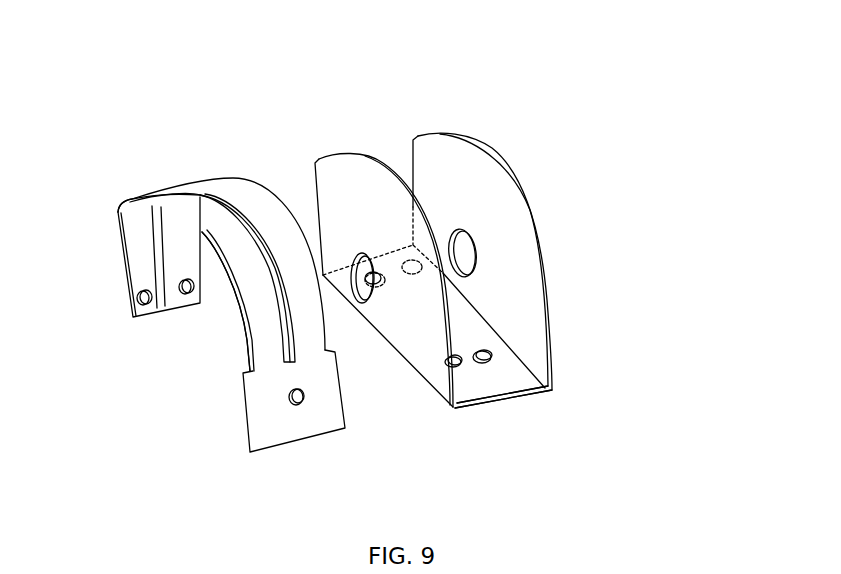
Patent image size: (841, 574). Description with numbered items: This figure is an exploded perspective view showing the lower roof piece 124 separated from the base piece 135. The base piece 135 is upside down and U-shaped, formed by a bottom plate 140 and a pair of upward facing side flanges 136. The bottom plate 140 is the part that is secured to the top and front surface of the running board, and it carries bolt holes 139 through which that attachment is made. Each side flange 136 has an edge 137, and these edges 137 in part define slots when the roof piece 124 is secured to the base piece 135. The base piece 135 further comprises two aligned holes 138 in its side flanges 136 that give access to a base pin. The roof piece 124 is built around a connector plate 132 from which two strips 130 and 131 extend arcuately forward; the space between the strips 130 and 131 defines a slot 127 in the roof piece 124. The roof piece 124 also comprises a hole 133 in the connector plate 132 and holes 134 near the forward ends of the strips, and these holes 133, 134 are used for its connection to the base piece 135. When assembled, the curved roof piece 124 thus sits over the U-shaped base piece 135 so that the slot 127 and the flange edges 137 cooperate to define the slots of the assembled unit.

The roof piece 124 is at (203, 273).
The slot 127 is at (209, 199).
The strip 130 is at (266, 208).
The strip 131 is at (236, 306).
The connector plate 132 is at (242, 437).
The hole 133 is at (284, 398).
The holes 134 is at (178, 294).
The base piece 135 is at (498, 252).
The side flanges 136 is at (333, 181).
The edges 137 is at (531, 245).
The aligned holes 138 is at (470, 255).
The bolt holes 139 is at (408, 277).
The bottom plate 140 is at (530, 390).